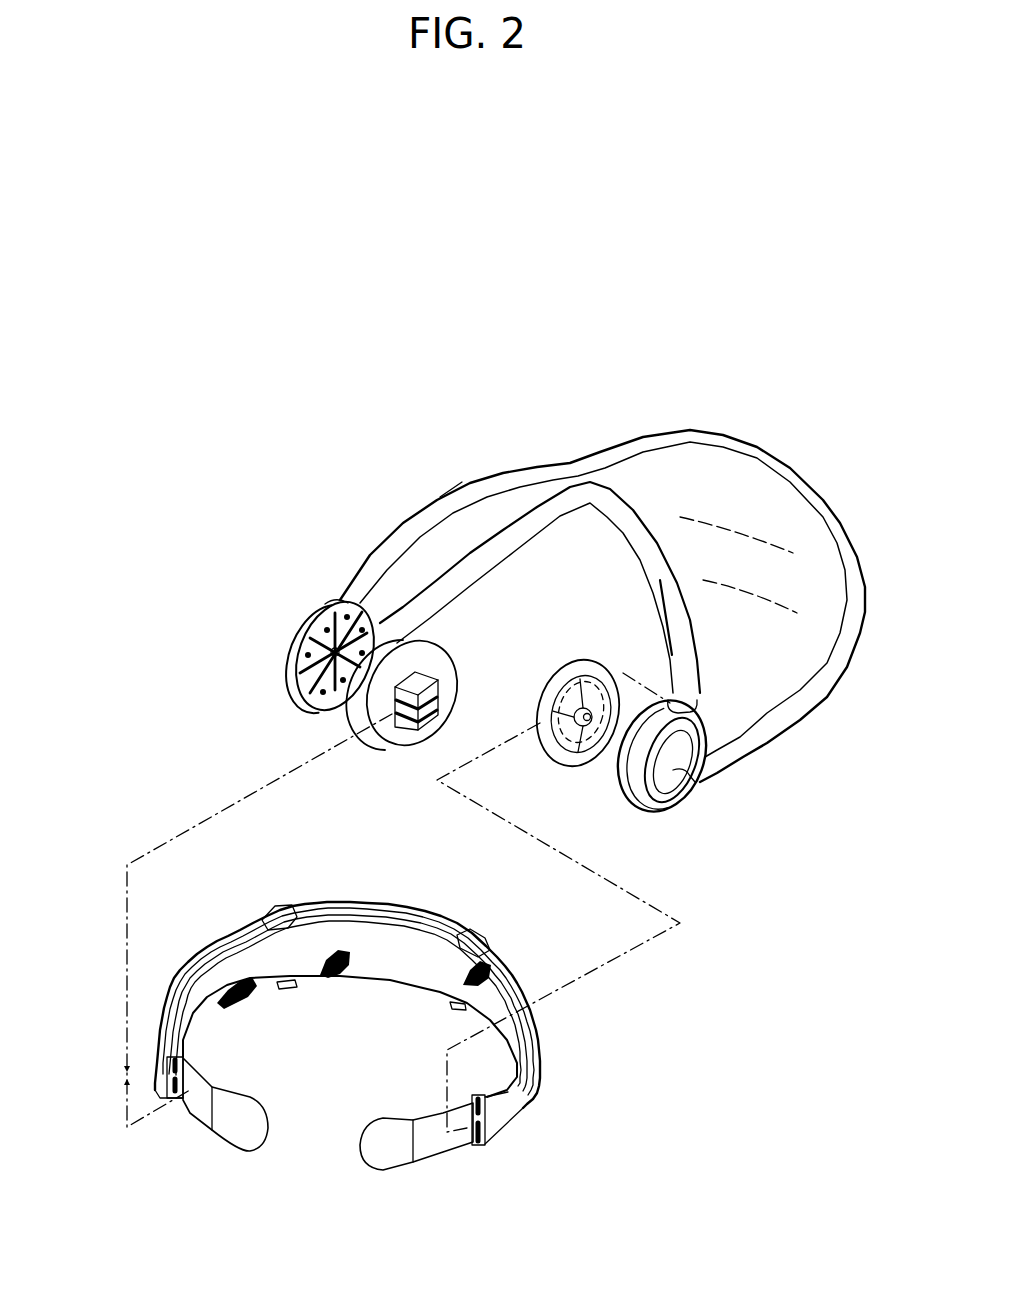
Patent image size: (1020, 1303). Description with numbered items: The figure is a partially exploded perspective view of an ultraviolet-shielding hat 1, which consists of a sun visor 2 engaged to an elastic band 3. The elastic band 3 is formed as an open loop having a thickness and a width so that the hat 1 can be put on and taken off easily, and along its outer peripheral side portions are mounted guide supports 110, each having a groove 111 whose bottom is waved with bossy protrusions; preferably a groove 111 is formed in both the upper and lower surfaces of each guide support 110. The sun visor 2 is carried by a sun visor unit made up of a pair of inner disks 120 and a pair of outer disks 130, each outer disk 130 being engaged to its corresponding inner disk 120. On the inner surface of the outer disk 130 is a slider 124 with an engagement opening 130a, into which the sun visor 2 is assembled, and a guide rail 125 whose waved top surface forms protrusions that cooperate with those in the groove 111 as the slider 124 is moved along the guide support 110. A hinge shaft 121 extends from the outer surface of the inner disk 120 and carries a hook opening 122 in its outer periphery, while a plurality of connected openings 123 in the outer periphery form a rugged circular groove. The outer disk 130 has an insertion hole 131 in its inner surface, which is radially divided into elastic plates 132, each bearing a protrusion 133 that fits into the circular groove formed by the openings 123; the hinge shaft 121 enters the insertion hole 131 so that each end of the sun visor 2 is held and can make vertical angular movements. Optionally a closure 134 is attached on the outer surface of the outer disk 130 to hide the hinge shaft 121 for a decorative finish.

The hat 1 is at (122, 628).
The sun visor 2 is at (603, 470).
The elastic band 3 is at (398, 1036).
The guide support 110 is at (542, 1066).
The groove 111 is at (493, 1091).
The inner disk 120 is at (486, 710).
The hinge shaft 121 is at (563, 737).
The hook opening 122 is at (602, 680).
The openings 123 is at (578, 672).
The slider 124 is at (452, 660).
The guide rail 125 is at (396, 720).
The outer disk 130 is at (490, 703).
The engagement opening 130a is at (333, 602).
The insertion hole 131 is at (295, 670).
The elastic plates 132 is at (323, 648).
The protrusion 133 is at (323, 633).
The closure 134 is at (692, 782).